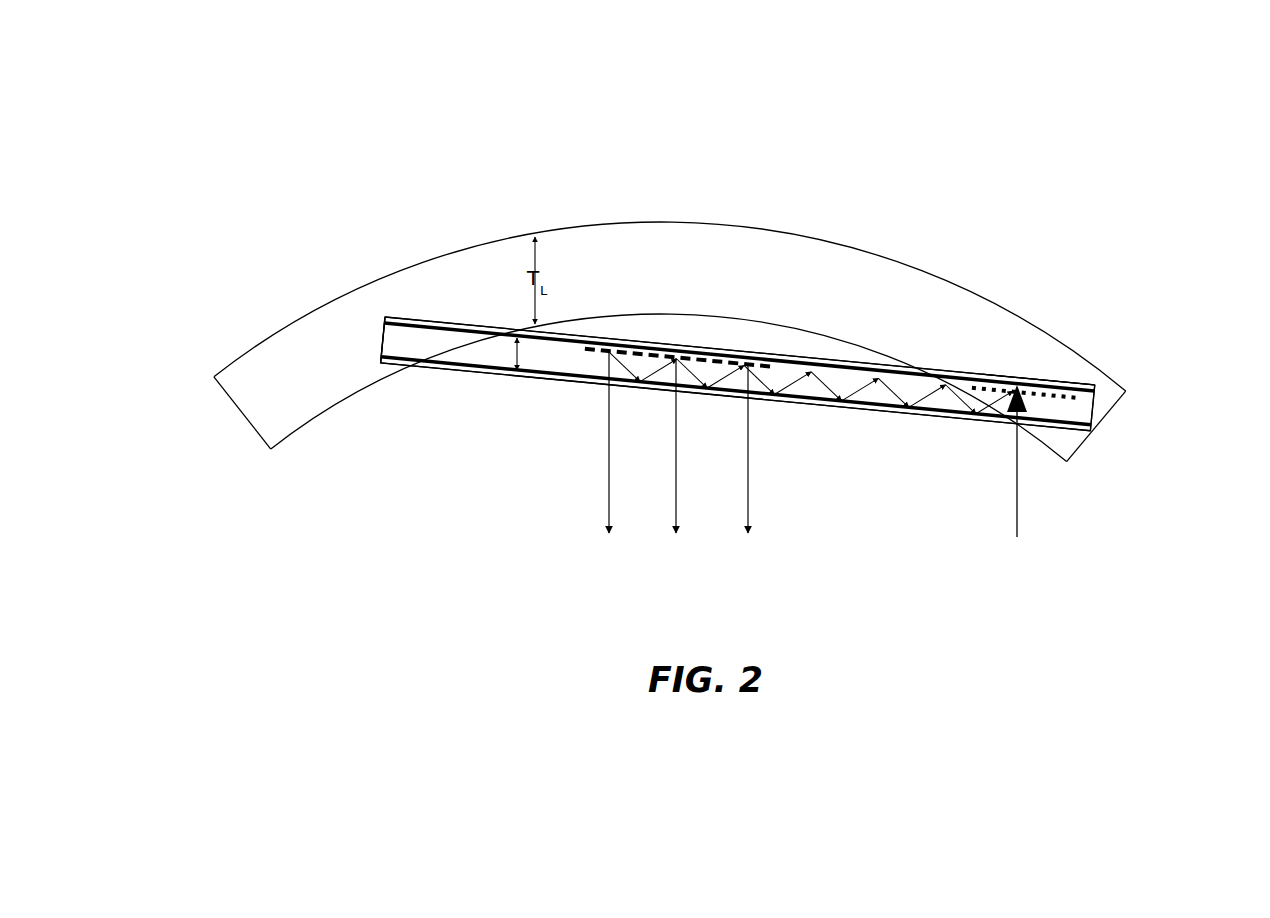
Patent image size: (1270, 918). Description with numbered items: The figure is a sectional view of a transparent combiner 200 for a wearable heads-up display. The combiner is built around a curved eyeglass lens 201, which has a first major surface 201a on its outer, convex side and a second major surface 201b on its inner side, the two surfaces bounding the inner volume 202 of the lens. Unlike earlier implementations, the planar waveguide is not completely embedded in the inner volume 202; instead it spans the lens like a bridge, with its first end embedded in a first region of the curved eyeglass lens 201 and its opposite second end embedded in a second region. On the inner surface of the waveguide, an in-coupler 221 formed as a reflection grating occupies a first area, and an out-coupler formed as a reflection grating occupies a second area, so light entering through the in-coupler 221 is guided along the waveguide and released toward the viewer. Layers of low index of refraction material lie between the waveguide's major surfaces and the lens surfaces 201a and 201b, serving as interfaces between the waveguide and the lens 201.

The transparent combiner 200 is at (233, 186).
The curved eyeglass lens 201 is at (643, 326).
The first major surface of the lens 201a is at (838, 245).
The second major surface of the lens 201b is at (302, 426).
The inner volume of curved eyeglass lens 202 is at (790, 409).
The in-coupler 221 is at (1075, 393).